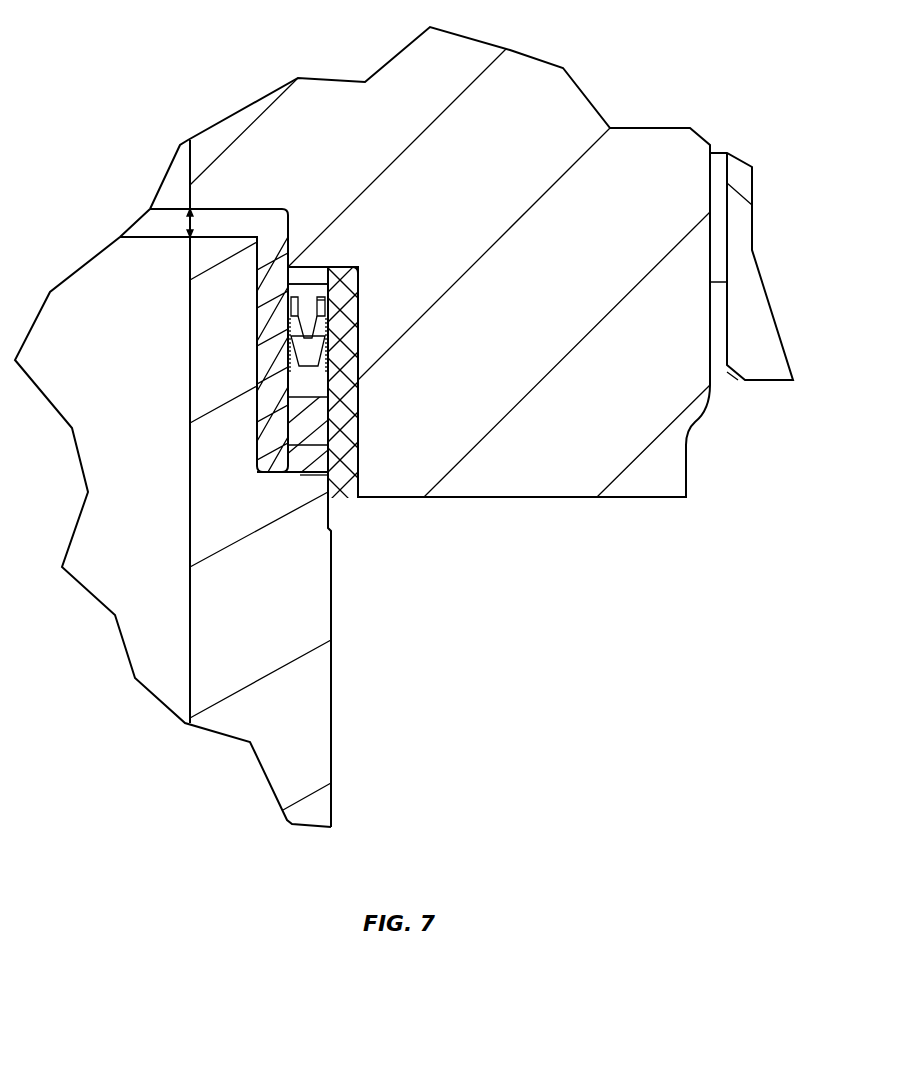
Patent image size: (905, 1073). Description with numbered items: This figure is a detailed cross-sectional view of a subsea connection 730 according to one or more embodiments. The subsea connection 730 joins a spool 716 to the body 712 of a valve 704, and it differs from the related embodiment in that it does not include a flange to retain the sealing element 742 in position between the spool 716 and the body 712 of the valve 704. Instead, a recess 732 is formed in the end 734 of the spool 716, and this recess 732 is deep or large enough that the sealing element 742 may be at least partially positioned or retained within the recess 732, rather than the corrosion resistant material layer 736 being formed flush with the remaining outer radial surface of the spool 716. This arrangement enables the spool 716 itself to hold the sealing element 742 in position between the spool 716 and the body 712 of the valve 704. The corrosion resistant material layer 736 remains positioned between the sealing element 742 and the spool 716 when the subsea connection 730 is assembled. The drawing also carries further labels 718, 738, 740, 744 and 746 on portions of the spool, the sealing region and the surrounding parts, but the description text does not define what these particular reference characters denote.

The valve 704 is at (686, 71).
The body 712 is at (622, 405).
The spool 716 is at (285, 628).
The wall 718 is at (190, 612).
The subsea connection 730 is at (622, 670).
The recess 732 is at (260, 350).
The end 734 is at (218, 235).
The corrosion resistant material layer 736 is at (270, 250).
The spacer column 738 is at (360, 393).
The cap 740 is at (354, 270).
The sealing element 742 is at (330, 316).
The lip thickness 744 is at (185, 227).
The gap 746 is at (307, 477).